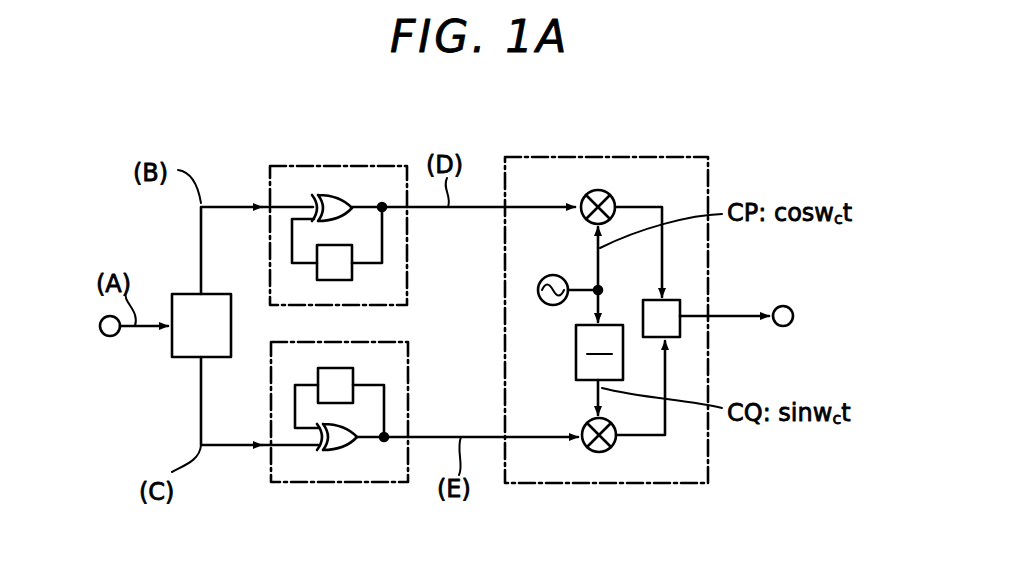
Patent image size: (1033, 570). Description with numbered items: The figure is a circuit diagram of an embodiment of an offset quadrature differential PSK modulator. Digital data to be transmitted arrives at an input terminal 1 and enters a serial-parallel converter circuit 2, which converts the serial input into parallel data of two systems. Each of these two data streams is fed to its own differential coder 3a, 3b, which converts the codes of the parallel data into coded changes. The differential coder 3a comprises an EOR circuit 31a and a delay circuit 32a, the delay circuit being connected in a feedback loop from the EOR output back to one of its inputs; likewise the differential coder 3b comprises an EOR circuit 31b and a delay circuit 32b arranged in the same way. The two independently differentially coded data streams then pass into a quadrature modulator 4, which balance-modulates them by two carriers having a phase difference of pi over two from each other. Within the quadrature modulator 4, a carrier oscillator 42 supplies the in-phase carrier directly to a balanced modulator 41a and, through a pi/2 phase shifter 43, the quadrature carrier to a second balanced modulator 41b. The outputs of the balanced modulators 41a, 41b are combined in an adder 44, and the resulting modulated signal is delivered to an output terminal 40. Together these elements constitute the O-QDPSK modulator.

The input terminal 1 is at (102, 319).
The serial-parallel converter circuit 2 is at (190, 357).
The differential coder 3a is at (330, 166).
The differential coder 3b is at (304, 484).
The EOR circuit 31a is at (326, 196).
The EOR circuit 31b is at (345, 449).
The delay circuit 32a is at (342, 280).
The delay circuit 32b is at (345, 368).
The quadrature modulator 4 is at (608, 157).
The balanced modulator 41a is at (609, 194).
The balanced modulator 41b is at (613, 446).
The carrier oscillator 42 is at (552, 275).
The pi/2 phase shifter 43 is at (576, 352).
The adder 44 is at (645, 300).
The output terminal 40 is at (793, 310).